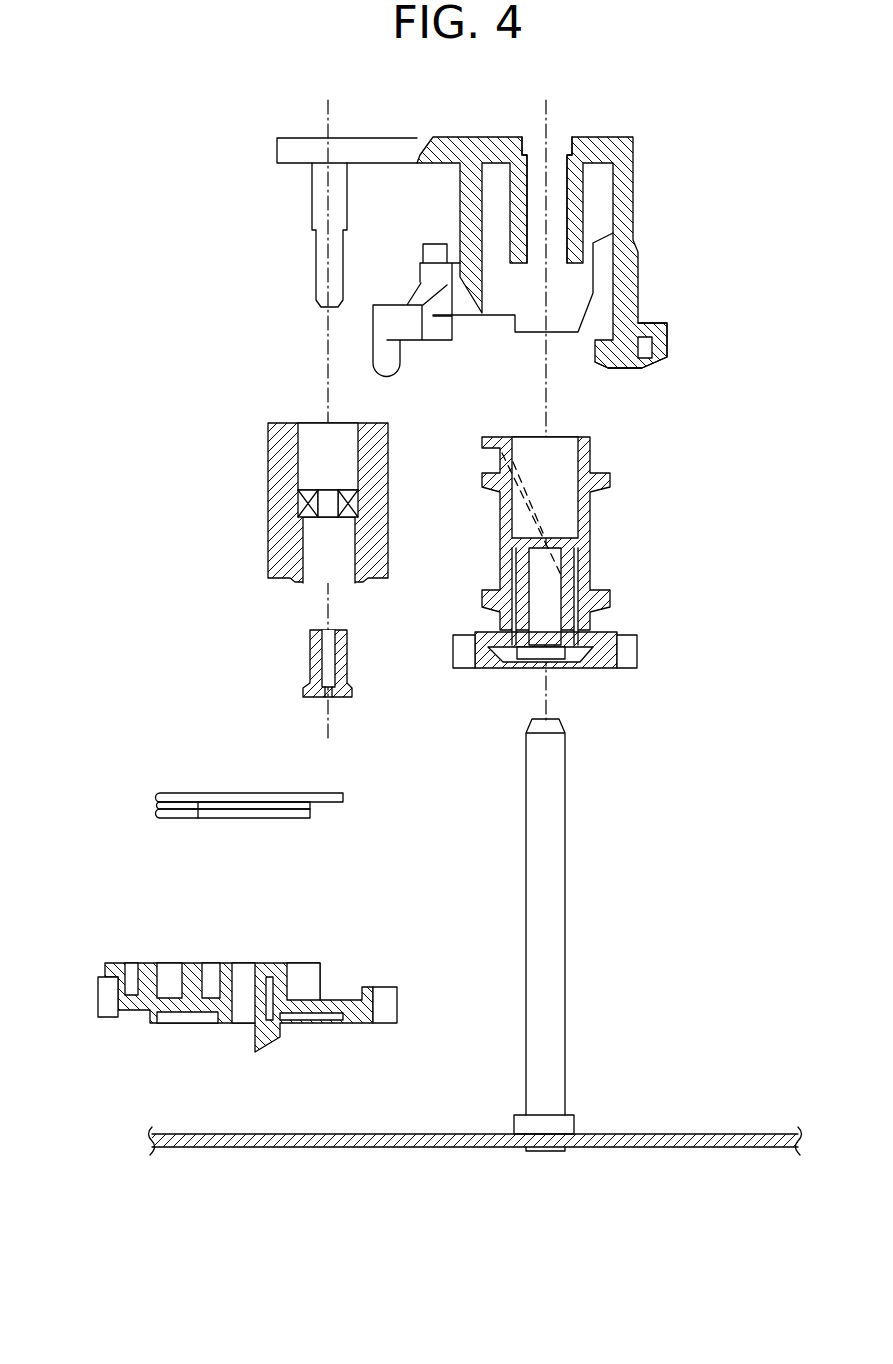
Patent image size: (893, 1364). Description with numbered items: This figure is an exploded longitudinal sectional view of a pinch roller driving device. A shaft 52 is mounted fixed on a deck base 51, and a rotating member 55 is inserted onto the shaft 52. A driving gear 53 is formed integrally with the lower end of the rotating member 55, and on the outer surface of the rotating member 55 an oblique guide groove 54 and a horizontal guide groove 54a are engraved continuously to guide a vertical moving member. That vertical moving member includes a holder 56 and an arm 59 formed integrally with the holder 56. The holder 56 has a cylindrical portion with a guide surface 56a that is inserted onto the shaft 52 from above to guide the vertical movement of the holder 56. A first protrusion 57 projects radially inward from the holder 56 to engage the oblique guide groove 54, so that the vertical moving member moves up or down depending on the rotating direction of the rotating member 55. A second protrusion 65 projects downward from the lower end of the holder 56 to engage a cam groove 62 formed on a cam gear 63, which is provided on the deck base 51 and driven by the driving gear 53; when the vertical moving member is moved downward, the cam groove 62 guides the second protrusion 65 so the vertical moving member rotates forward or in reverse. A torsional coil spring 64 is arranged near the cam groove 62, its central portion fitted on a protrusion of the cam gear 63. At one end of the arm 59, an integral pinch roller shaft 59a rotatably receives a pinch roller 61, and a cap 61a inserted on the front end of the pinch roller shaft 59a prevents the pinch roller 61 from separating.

The deck base 51 is at (352, 1150).
The shaft 52 is at (557, 977).
The driving gear 53 is at (627, 668).
The oblique guide groove 54 is at (497, 508).
The horizontal guide groove 54a is at (593, 612).
The rotating member 55 is at (551, 541).
The holder 56 is at (570, 273).
The guide surface 56a is at (558, 195).
The first protrusion 57 is at (597, 355).
The arm 59 is at (319, 183).
The pinch roller shaft 59a is at (312, 186).
The pinch roller 61 is at (270, 472).
The cap 61a is at (310, 652).
The cam groove 62 is at (208, 970).
The cam gear 63 is at (110, 988).
The torsional coil spring 64 is at (180, 793).
The second protrusion 65 is at (388, 362).